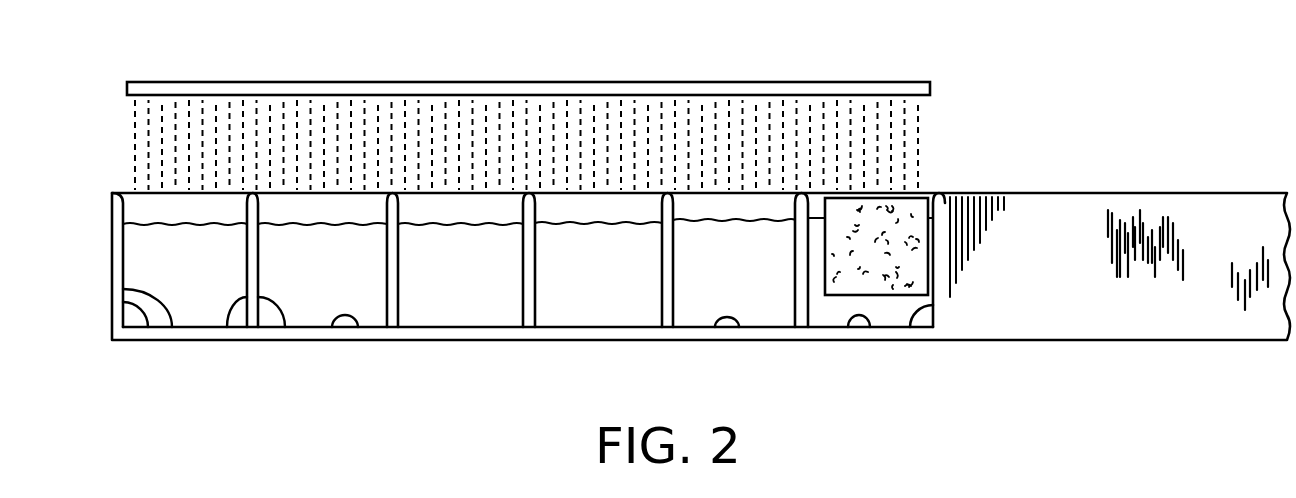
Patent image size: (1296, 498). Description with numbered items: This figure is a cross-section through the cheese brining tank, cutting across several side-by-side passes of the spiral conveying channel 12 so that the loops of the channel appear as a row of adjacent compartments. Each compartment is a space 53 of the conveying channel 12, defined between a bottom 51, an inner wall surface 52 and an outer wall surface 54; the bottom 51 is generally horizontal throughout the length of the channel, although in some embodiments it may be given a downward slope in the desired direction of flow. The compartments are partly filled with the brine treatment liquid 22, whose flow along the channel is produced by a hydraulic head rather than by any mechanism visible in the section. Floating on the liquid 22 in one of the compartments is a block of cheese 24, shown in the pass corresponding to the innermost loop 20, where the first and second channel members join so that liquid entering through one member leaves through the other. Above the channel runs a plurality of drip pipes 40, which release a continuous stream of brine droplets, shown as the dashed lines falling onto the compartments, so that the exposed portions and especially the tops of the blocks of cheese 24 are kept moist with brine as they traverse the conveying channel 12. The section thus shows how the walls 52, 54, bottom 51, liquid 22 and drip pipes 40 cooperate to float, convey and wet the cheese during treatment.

The conveying channel 12 is at (187, 207).
The drip pipes 40 is at (150, 82).
The inner wall surface 52 is at (229, 327).
The brine treatment liquid 22 is at (648, 222).
The space 53 is at (163, 268).
The bottom 51 is at (123, 287).
The outer wall surface 54 is at (148, 327).
The innermost loop 20 is at (848, 327).
The blocks of cheese 24 is at (923, 203).